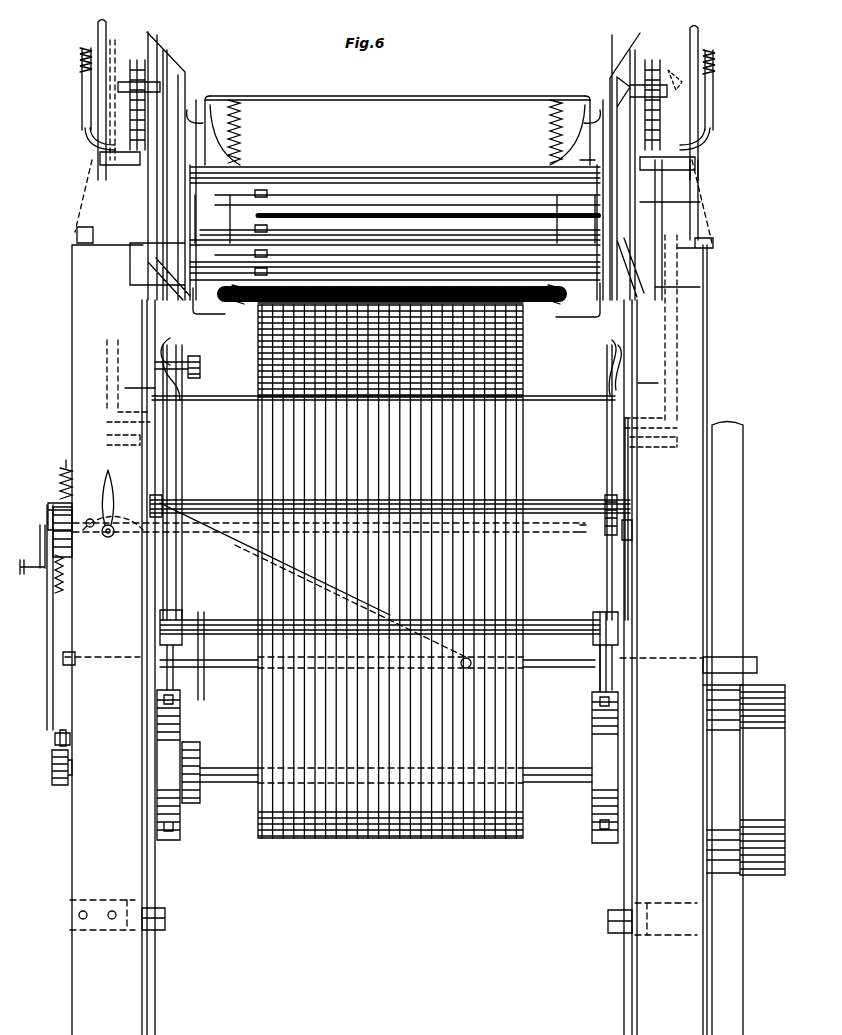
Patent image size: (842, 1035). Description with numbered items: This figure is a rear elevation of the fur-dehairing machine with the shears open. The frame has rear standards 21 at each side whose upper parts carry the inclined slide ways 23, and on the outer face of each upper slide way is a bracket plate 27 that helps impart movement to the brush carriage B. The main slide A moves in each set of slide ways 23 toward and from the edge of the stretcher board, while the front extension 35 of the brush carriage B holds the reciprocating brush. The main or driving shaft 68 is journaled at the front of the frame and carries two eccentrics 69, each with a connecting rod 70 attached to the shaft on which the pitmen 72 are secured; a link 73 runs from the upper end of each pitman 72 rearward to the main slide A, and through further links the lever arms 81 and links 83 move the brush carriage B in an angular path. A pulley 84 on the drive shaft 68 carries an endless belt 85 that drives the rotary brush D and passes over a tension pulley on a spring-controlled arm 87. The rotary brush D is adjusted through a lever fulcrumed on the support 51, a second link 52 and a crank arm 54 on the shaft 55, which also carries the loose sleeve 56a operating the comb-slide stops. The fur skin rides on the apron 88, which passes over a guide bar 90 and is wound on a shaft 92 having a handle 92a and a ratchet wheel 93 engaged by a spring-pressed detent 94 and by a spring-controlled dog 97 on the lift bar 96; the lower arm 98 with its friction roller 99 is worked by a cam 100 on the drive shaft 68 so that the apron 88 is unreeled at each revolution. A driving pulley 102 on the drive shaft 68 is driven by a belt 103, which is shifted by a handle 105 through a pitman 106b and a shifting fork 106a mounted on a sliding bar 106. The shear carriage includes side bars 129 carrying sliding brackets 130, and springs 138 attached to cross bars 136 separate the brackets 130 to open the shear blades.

The standard 21 is at (391, 631).
The slide way 23 is at (652, 274).
The bracket plate 27 is at (672, 68).
The front extension of the brush carriage 35 is at (395, 242).
The support 51 is at (698, 383).
The second link 52 is at (590, 450).
The crank arm 54 is at (605, 360).
The shaft 55 is at (622, 506).
The sleeve 56a is at (250, 500).
The main or driving shaft 68 is at (548, 770).
The eccentric 69 is at (387, 766).
The connecting rod 70 is at (630, 660).
The pitman 72 is at (652, 800).
The link 73 is at (722, 350).
The lever arm 81 is at (712, 40).
The link 83 is at (688, 49).
The pulley 84 is at (200, 797).
The endless belt 85 is at (213, 695).
The spring-controlled arm 87 is at (200, 366).
The apron 88 is at (390, 570).
The guide bar 90 is at (570, 396).
The shaft 92 is at (560, 532).
The crank arm or handle 92a is at (27, 549).
The ratchet wheel 93 is at (72, 548).
The spring-pressed detent 94 is at (58, 493).
The lift bar 96 is at (47, 660).
The spring-controlled dog 97 is at (57, 572).
The lower arm 98 is at (55, 740).
The friction roller 99 is at (66, 735).
The cam 100 is at (52, 767).
The driving pulley 102 is at (746, 815).
The belt 103 is at (727, 729).
The handle 105 is at (112, 470).
The sliding bar 106 is at (560, 640).
The shifting fork 106a is at (752, 652).
The pitman 106b is at (250, 575).
The side bar 129 is at (585, 108).
The bracket 130 is at (591, 158).
The cross bar 136 is at (571, 335).
The spring 138 is at (540, 320).
The main slide A is at (700, 202).
The brush carriage B is at (388, 213).
The rotary brush D is at (538, 360).